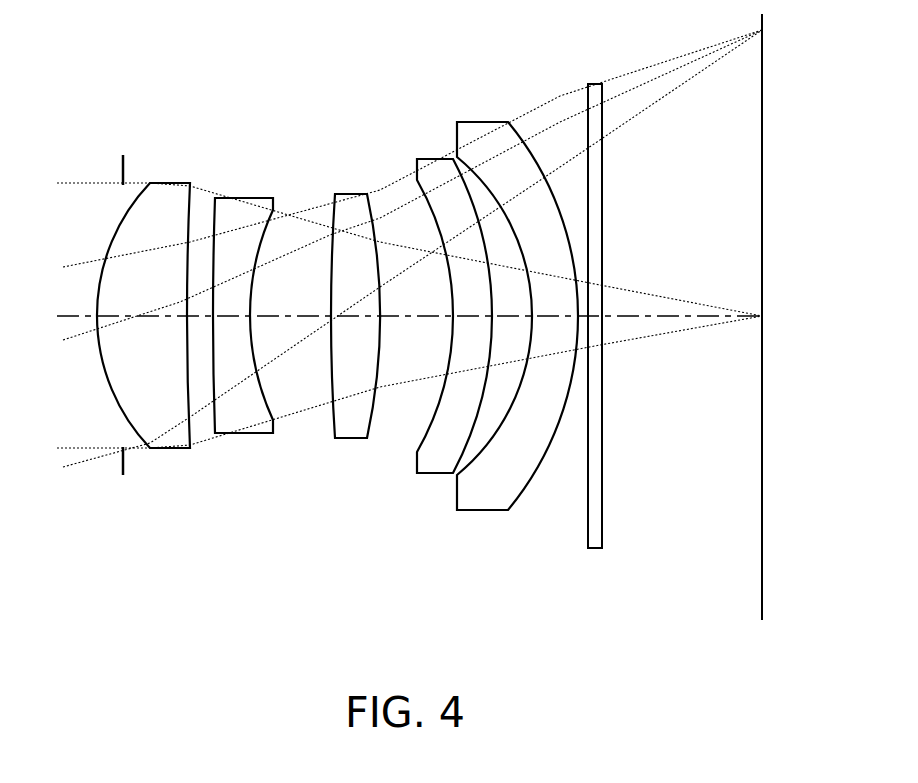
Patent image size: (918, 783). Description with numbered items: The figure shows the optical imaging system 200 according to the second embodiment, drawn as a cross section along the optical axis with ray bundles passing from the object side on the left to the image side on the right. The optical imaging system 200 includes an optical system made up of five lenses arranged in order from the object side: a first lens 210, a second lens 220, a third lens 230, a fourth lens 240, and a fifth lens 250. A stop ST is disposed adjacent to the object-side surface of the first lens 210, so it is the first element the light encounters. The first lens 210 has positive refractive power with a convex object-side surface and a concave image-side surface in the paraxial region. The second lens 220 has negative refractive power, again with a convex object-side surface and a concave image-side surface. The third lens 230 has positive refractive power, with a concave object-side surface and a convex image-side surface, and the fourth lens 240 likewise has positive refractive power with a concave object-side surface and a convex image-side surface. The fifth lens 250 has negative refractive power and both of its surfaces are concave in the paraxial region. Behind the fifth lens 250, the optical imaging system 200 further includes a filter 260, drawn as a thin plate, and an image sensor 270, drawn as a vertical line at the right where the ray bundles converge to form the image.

The optical imaging system 200 is at (246, 122).
The stop ST is at (122, 476).
The first lens 210 is at (165, 450).
The second lens 220 is at (243, 438).
The third lens 230 is at (347, 443).
The fourth lens 240 is at (435, 475).
The fifth lens 250 is at (488, 512).
The filter 260 is at (595, 550).
The image sensor 270 is at (758, 583).